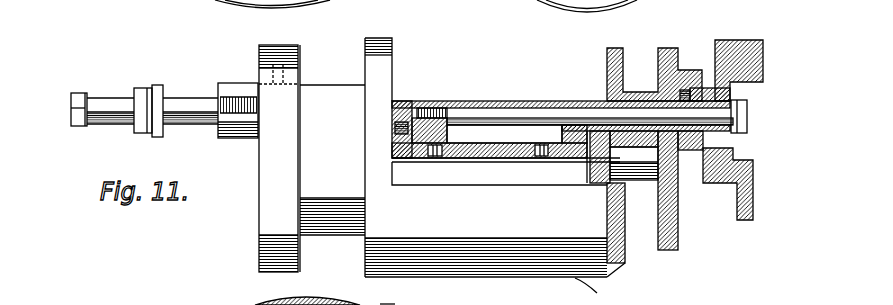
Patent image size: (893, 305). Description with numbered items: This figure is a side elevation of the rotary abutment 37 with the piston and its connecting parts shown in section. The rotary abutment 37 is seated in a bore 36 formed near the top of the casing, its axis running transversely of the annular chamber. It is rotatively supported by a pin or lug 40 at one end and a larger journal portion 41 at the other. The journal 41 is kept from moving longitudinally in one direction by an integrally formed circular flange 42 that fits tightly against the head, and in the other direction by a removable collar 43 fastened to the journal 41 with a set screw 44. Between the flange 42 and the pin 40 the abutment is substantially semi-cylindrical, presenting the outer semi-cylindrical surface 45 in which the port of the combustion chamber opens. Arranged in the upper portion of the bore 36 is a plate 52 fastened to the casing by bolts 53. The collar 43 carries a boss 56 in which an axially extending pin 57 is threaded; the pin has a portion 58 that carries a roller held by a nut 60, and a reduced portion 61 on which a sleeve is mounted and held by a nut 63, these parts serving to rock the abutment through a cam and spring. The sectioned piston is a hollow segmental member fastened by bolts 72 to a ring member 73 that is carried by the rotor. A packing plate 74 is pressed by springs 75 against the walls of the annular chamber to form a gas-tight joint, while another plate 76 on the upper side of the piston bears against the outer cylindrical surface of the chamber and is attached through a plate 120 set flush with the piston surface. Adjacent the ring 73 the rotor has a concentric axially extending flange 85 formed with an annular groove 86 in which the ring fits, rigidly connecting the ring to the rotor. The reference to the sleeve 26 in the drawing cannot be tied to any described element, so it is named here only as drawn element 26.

The sleeve 26 is at (502, 101).
The bore 36 is at (198, 304).
The rotary abutment 37 is at (495, 157).
The pin or lug 40 is at (649, 190).
The journal portion 41 is at (315, 88).
The circular flange 42 is at (380, 48).
The removable collar 43 is at (259, 171).
The set screw 44 is at (277, 45).
The outer semi-cylindrical surface 45 is at (595, 291).
The plate 52 is at (228, 304).
The bolts 53 is at (327, 300).
The boss 56 is at (225, 87).
The axially extending pin 57 is at (238, 97).
The portion of pin 58 is at (175, 103).
The nut 60 is at (147, 110).
The reduced portion 61 is at (100, 100).
The nut 63 is at (75, 100).
The bolts 72 is at (520, 118).
The ring member 73 is at (628, 98).
The packing plate 74 is at (432, 110).
The springs 75 is at (400, 122).
The plate 76 is at (388, 298).
The axially extending flange 85 is at (713, 88).
The annular groove 86 is at (735, 100).
The plate 120 is at (412, 304).